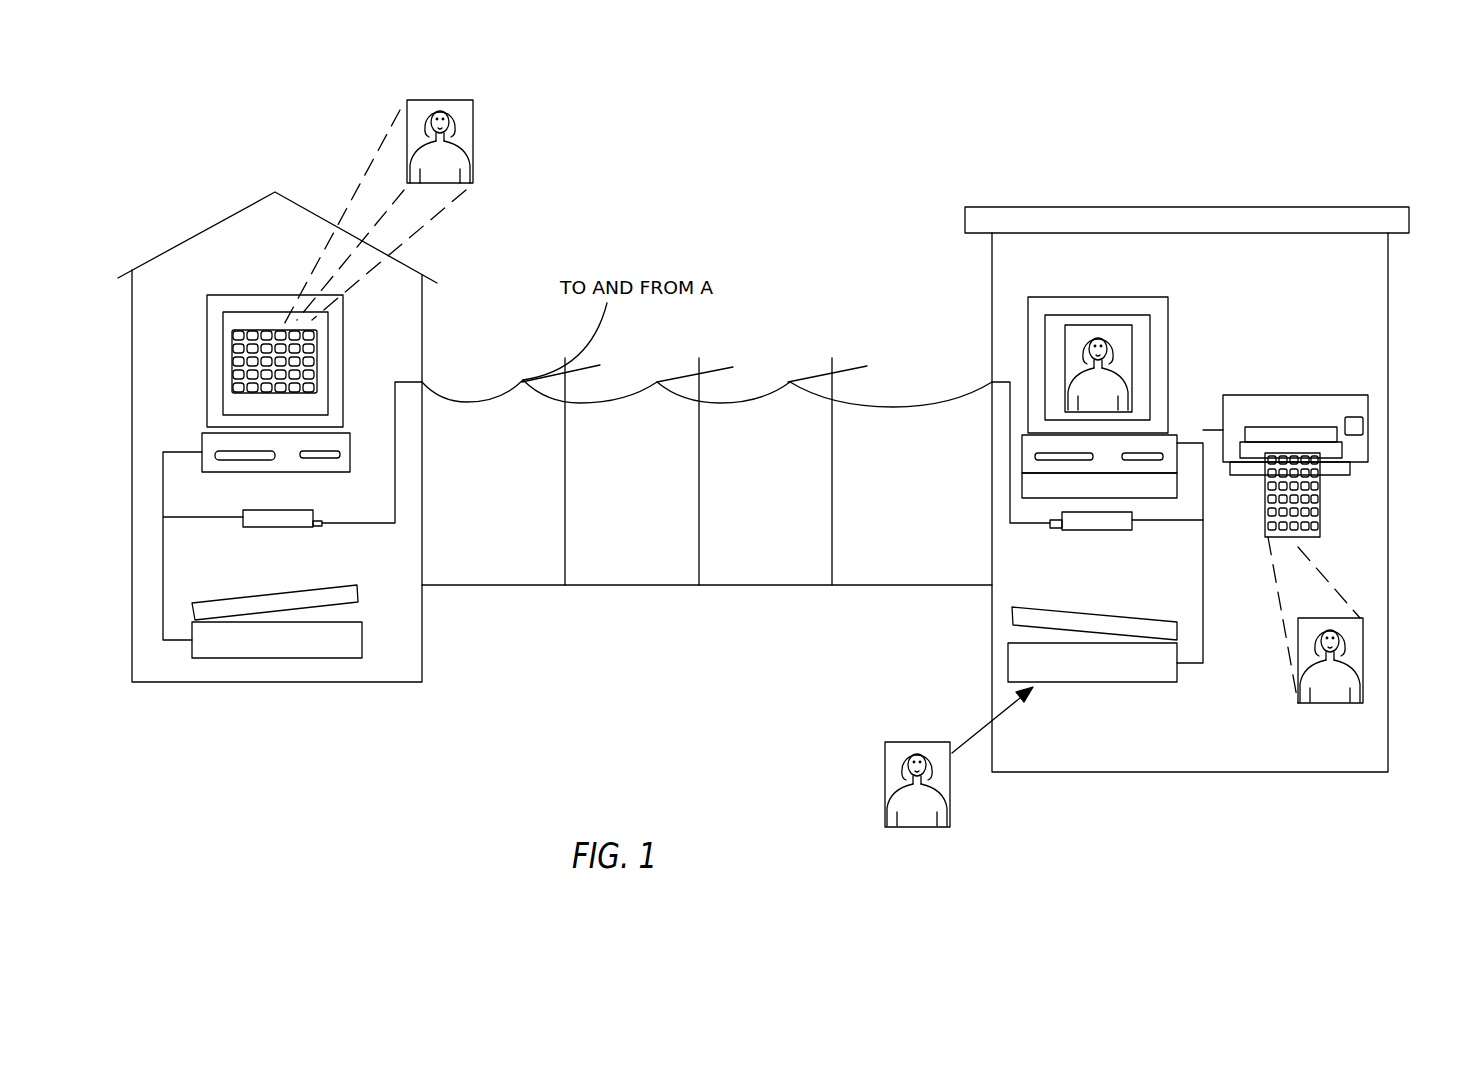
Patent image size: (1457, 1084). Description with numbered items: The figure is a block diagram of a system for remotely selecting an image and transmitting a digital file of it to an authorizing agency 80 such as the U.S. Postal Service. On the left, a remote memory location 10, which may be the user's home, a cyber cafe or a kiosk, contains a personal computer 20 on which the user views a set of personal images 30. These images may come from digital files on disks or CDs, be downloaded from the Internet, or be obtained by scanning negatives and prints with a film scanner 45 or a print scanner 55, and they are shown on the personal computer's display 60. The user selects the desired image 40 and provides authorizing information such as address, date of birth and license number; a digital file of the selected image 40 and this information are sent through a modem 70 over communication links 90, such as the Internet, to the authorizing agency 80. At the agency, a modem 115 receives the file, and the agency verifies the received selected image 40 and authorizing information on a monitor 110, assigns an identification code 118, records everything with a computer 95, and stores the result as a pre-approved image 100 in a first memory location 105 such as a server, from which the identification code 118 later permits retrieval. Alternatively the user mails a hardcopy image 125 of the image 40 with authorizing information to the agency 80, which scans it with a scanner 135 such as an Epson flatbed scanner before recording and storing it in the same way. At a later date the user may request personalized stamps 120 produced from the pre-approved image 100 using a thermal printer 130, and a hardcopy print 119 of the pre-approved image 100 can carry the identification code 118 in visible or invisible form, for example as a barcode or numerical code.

The remote memory location 10 is at (170, 267).
The personal computer 20 is at (208, 440).
The set of personal images 30 is at (313, 350).
The selected image 40 is at (473, 137).
The film scanner 45 is at (330, 452).
The print scanner 55 is at (248, 650).
The personal computer display 60 is at (248, 300).
The modem 70 is at (252, 525).
The authorizing agency 80 is at (1318, 222).
The communication links 90 is at (750, 395).
The computer 95 is at (1028, 445).
The pre-approved image 100 is at (1082, 347).
The first memory location 105 is at (1030, 485).
The monitor 110 is at (1143, 342).
The modem 115 is at (1072, 523).
The identification code 118 is at (1087, 393).
The hardcopy print 119 is at (1363, 647).
The personalized stamps 120 is at (1307, 513).
The hardcopy image 125 is at (888, 770).
The thermal printer 130 is at (1345, 403).
The scanner 135 is at (1120, 667).